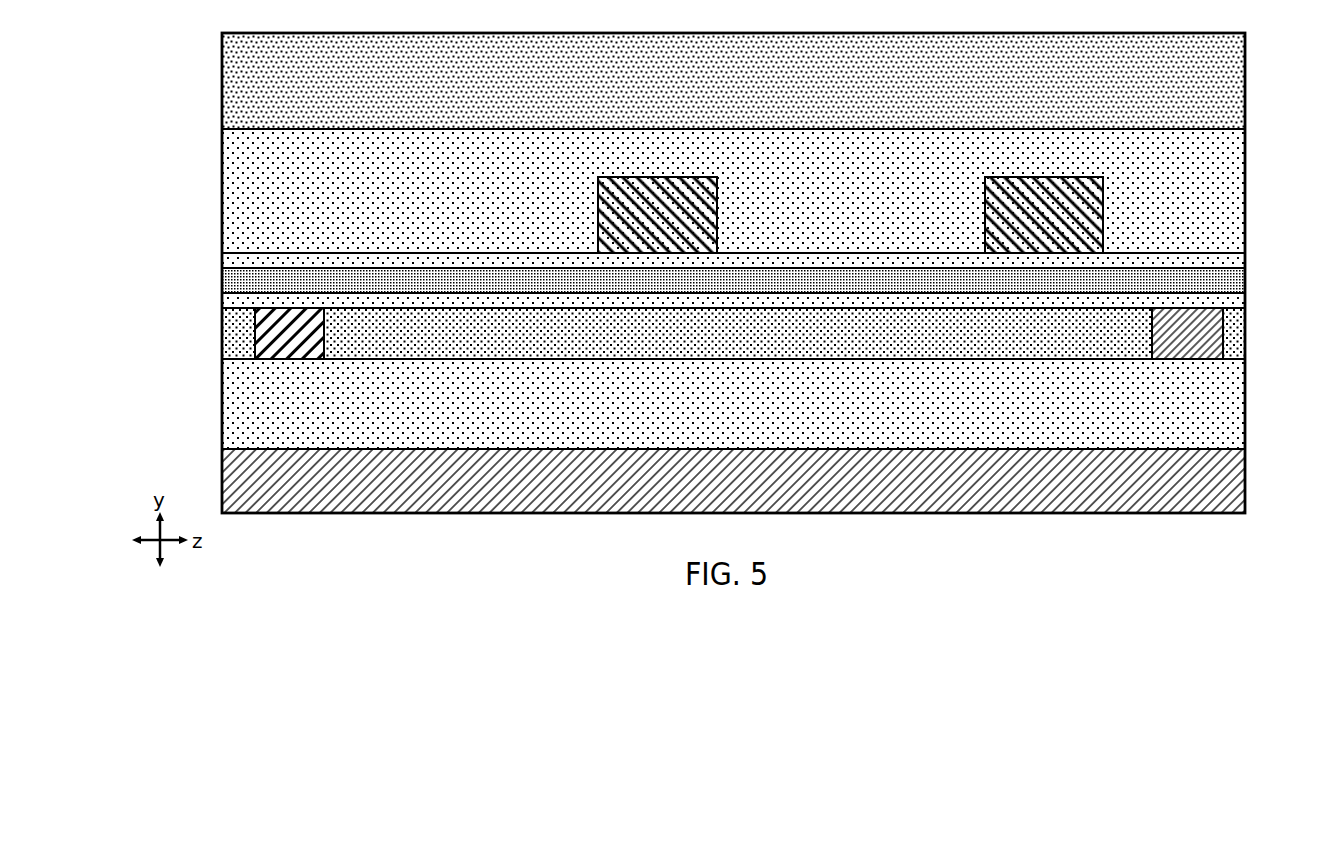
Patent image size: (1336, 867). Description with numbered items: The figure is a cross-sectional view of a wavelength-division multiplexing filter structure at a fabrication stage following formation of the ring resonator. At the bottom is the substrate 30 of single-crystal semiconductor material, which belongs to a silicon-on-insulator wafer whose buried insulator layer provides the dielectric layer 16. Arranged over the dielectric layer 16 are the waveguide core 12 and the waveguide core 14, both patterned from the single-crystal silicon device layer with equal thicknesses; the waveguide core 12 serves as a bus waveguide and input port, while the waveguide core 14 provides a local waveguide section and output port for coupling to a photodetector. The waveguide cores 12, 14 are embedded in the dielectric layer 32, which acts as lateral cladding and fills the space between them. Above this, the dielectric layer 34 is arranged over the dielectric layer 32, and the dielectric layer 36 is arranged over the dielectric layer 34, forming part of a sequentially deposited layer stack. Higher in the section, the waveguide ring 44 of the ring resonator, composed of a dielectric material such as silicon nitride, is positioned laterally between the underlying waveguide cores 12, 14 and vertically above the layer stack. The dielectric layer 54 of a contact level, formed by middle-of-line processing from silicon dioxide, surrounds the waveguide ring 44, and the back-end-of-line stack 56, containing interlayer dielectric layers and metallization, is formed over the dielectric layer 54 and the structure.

The waveguide core 12 is at (295, 332).
The waveguide core 14 is at (1187, 335).
The dielectric layer 16 is at (1210, 419).
The substrate 30 is at (1210, 478).
The dielectric layer 32 is at (1097, 327).
The dielectric layer 34 is at (270, 306).
The dielectric layer 36 is at (270, 261).
The waveguide ring 44 is at (622, 230).
The dielectric layer 54 is at (258, 181).
The back-end-of-line stack 56 is at (258, 95).